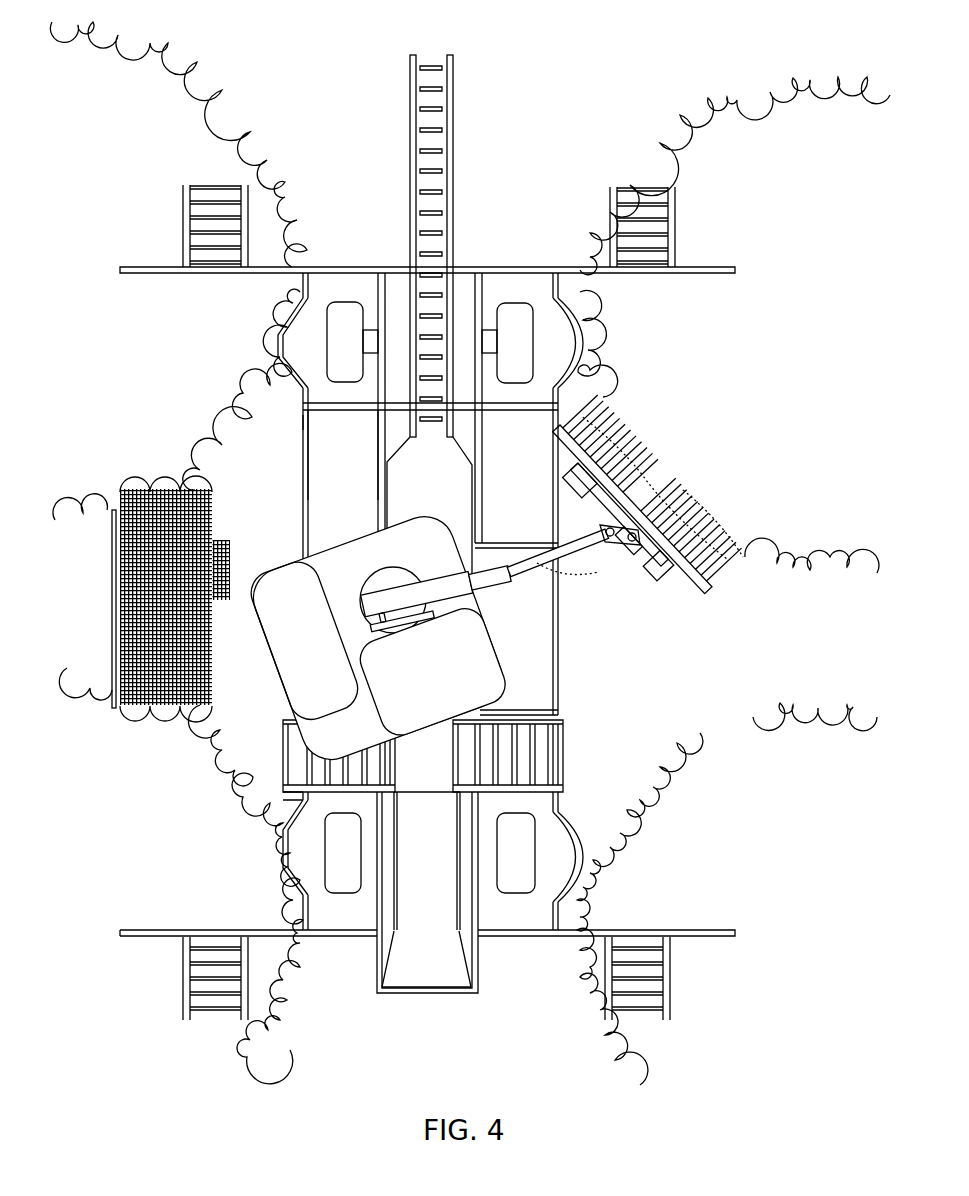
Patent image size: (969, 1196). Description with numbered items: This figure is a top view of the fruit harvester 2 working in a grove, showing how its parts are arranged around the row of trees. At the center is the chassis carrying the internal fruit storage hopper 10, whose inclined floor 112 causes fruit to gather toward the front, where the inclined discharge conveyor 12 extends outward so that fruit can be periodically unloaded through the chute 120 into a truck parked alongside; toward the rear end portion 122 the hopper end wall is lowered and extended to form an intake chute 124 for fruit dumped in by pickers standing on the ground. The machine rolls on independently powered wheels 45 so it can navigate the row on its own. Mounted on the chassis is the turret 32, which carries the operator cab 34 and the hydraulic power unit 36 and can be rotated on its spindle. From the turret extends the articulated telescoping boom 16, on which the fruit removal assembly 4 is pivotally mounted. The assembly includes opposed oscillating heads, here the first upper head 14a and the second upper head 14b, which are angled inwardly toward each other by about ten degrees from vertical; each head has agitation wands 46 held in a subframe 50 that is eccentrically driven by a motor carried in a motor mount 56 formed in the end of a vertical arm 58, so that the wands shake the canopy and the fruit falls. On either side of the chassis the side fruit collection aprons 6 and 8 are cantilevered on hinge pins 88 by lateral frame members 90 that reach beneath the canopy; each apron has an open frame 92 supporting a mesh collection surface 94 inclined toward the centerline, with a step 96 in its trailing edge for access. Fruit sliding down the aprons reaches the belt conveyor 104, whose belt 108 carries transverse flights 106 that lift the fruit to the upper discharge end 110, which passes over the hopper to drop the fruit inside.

The fruit harvester 2 is at (663, 728).
The boom mounted fruit removal assembly 4 is at (685, 528).
The side fruit collection apron 6 is at (560, 655).
The side fruit collection apron 8 is at (303, 500).
The internal fruit storage hopper 10 is at (410, 497).
The inclined discharge conveyor 12 is at (455, 160).
The first upper oscillating fruit removal head 14a is at (610, 443).
The second upper oscillating fruit removal head 14b is at (691, 529).
The articulated telescoping boom 16 is at (502, 565).
The turret 32 is at (345, 497).
The operator cab 34 is at (492, 657).
The hydraulic power unit 36 is at (302, 672).
The wheel 45 is at (345, 302).
The agitation wand 46 is at (643, 498).
The subframe 50 is at (615, 518).
The motor mount 56 is at (658, 566).
The vertical arm 58 is at (640, 556).
The hinge pin 88 is at (300, 418).
The lateral frame member 90 is at (365, 415).
The open frame 92 is at (112, 580).
The collection surface 94 is at (125, 645).
The step 96 is at (205, 1020).
The belt conveyor 104 is at (540, 708).
The transverse flight 106 is at (520, 765).
The belt 108 is at (457, 795).
The upper discharge end 110 is at (452, 758).
The inclined floor 112 is at (460, 892).
The chute 120 is at (567, 772).
The rear end portion 122 is at (472, 920).
The intake chute 124 is at (445, 990).